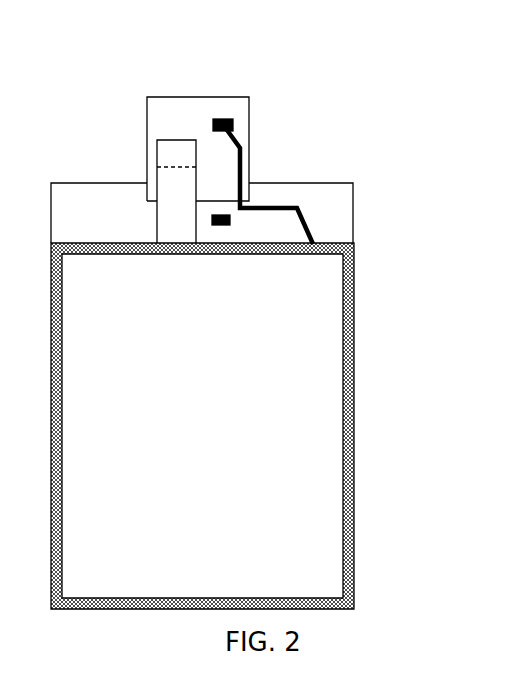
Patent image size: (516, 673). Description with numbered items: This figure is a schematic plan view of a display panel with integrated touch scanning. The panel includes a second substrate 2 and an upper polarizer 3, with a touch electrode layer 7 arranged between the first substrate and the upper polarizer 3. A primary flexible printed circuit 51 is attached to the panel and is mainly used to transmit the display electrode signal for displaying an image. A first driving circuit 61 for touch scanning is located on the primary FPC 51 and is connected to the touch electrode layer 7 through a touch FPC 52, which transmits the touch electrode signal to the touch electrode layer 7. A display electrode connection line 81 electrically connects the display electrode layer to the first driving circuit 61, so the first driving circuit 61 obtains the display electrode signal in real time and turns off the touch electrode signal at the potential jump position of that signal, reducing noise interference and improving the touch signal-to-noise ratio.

The second substrate 2 is at (338, 201).
The upper polarizer 3 is at (299, 510).
The touch electrode layer 7 is at (355, 361).
The primary flexible printed circuit 51 is at (170, 108).
The touch FPC 52 is at (168, 192).
The first driving circuit 61 is at (227, 117).
The display electrode connection line 81 is at (280, 198).